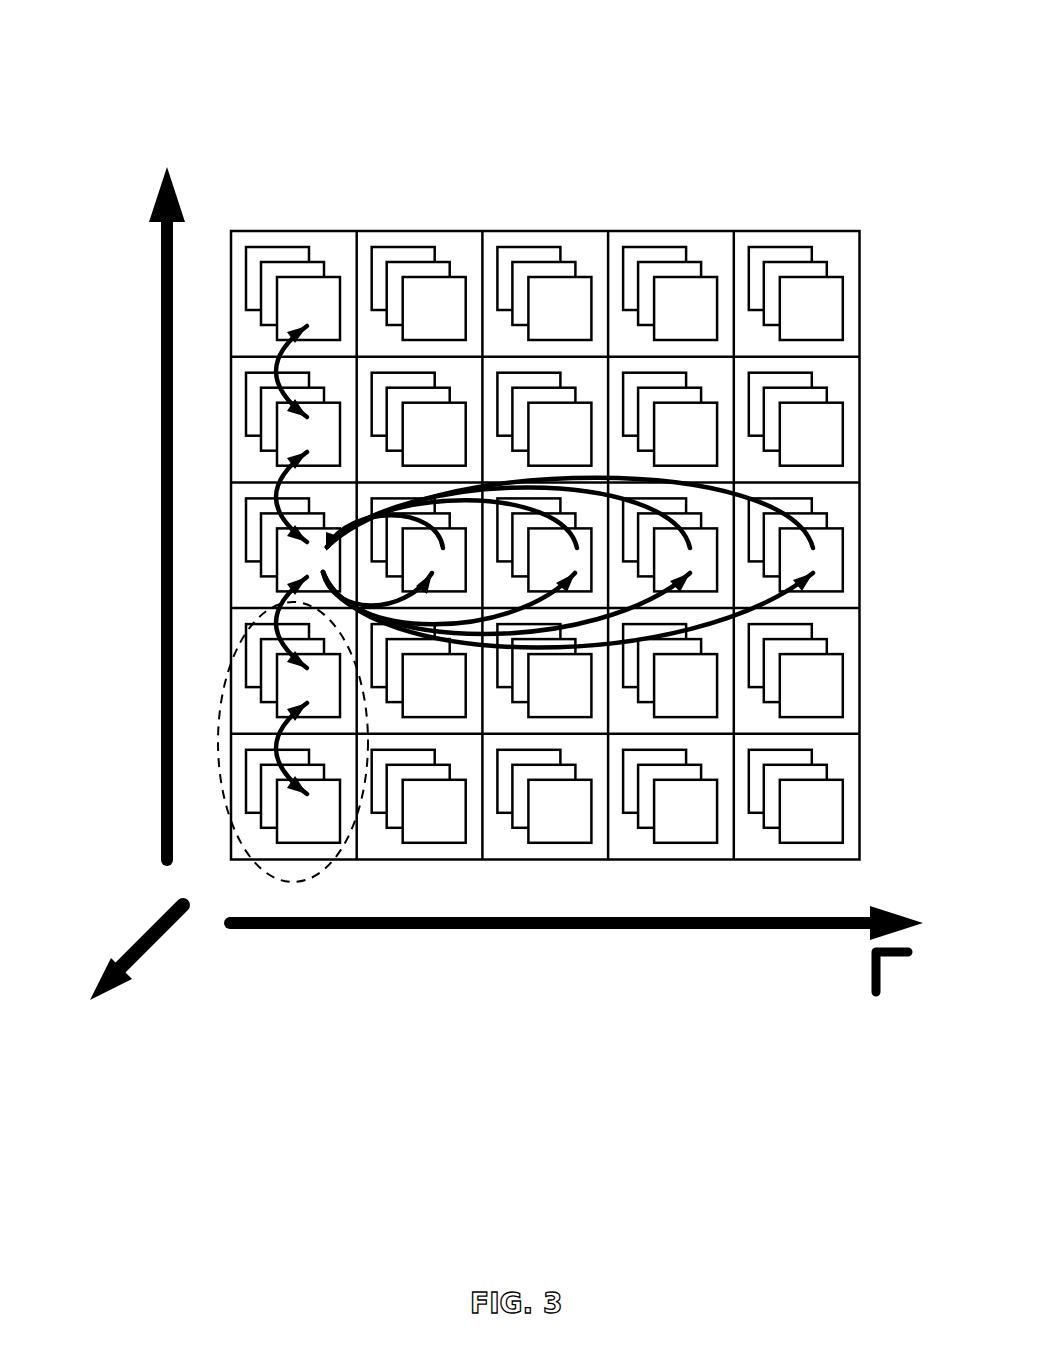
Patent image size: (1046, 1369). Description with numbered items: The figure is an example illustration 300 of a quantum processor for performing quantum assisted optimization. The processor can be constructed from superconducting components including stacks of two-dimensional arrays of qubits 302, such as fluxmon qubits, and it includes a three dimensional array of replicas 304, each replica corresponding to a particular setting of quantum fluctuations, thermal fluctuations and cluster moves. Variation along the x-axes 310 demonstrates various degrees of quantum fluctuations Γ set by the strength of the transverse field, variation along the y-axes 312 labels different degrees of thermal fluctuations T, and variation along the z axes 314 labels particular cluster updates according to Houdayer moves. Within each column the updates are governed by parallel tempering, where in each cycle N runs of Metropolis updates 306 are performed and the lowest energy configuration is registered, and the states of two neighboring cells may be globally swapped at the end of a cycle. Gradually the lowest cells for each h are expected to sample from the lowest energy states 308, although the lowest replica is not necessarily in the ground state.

The example illustration 300 is at (145, 58).
The stacks of two-dimensional arrays of qubits 302 is at (860, 462).
The three dimensional array of replicas 304 is at (813, 297).
The Metropolis updates 306 is at (395, 600).
The lowest energy states 308 is at (222, 722).
The x-axes 310 is at (702, 928).
The y-axes 312 is at (162, 785).
The z axes 314 is at (158, 940).